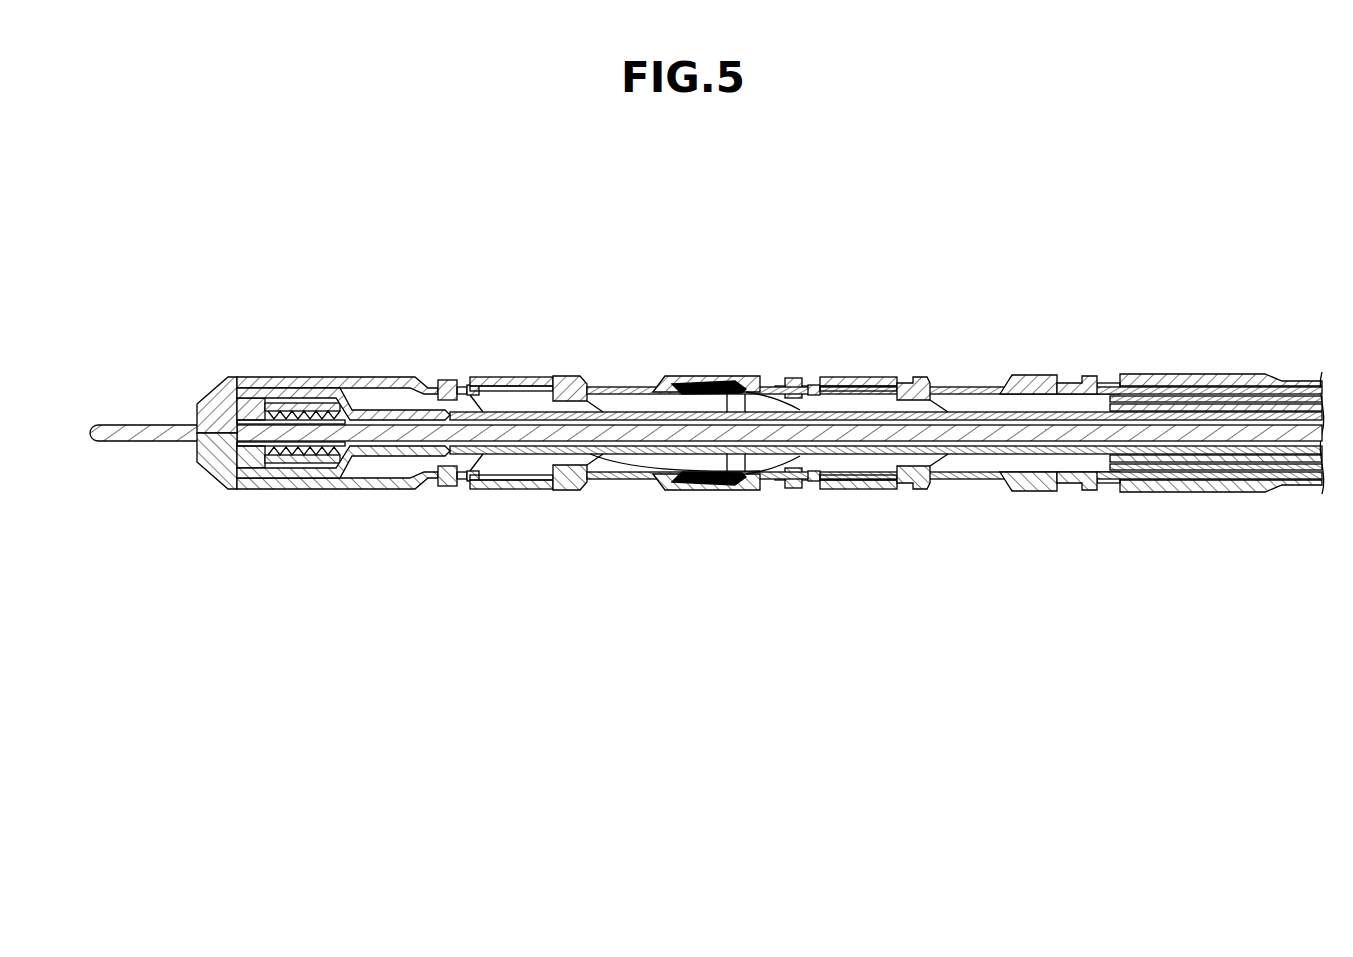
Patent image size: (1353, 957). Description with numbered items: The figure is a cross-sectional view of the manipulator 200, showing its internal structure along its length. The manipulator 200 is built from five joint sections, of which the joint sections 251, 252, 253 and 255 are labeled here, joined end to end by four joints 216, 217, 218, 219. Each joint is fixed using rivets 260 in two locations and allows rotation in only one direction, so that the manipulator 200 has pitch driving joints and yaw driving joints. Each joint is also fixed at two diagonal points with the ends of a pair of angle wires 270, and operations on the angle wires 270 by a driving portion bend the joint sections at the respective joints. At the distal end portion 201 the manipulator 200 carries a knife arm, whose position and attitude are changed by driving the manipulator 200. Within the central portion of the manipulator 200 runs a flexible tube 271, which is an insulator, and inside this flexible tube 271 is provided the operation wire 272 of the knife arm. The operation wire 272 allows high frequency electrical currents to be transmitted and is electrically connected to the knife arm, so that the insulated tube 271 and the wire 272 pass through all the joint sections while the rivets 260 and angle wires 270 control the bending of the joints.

The manipulator 200 is at (764, 228).
The distal end portion 201 is at (137, 444).
The joint section 251 is at (308, 376).
The flexible tube 271 is at (384, 388).
The rivets 260 is at (450, 380).
The joint section 252 is at (540, 376).
The angle wires 270 is at (622, 387).
The joint section 253 is at (708, 488).
The joint section 255 is at (1037, 375).
The joint 216 is at (470, 503).
The joint 217 is at (635, 500).
The joint 218 is at (815, 505).
The joint 219 is at (980, 493).
The operation wire 272 is at (1247, 434).